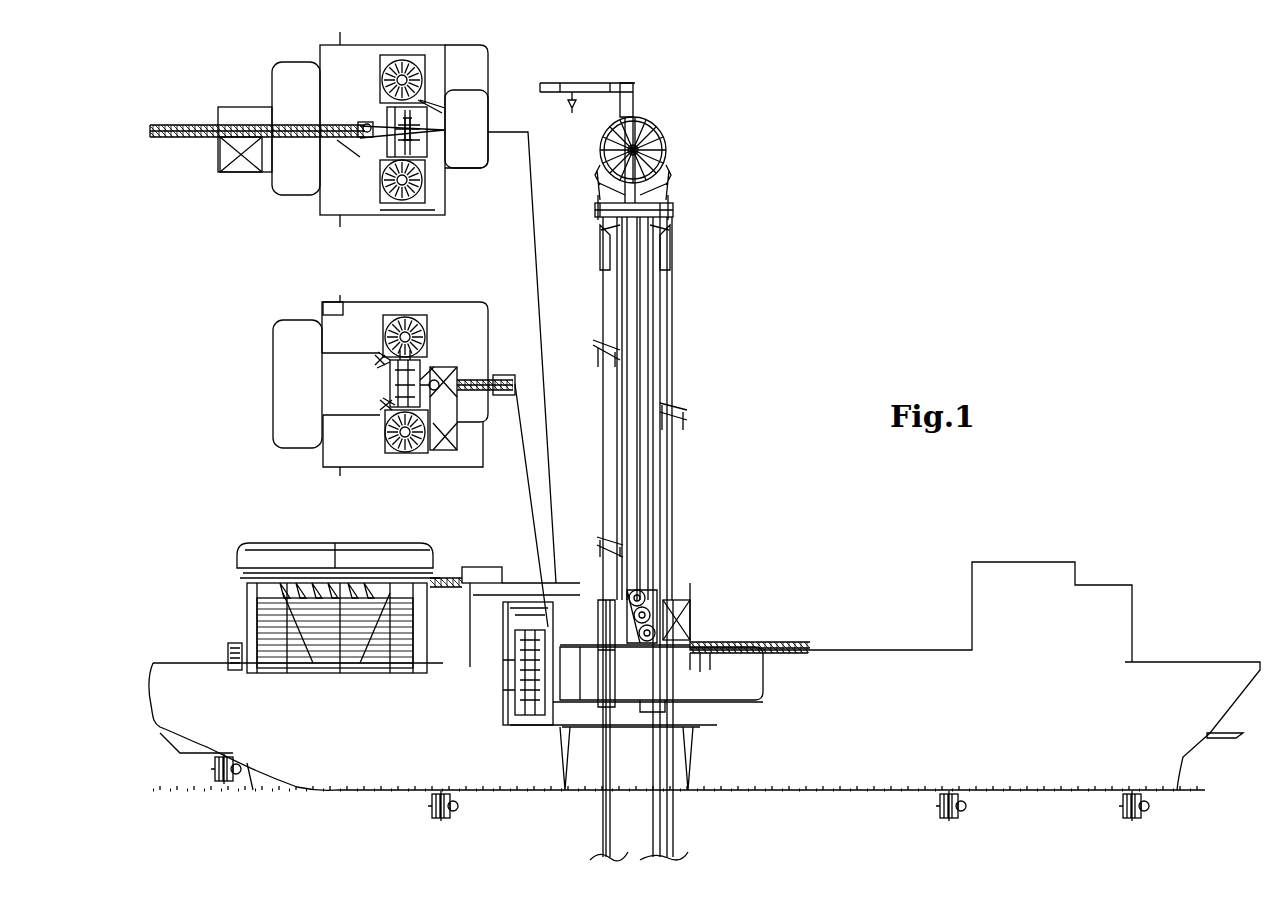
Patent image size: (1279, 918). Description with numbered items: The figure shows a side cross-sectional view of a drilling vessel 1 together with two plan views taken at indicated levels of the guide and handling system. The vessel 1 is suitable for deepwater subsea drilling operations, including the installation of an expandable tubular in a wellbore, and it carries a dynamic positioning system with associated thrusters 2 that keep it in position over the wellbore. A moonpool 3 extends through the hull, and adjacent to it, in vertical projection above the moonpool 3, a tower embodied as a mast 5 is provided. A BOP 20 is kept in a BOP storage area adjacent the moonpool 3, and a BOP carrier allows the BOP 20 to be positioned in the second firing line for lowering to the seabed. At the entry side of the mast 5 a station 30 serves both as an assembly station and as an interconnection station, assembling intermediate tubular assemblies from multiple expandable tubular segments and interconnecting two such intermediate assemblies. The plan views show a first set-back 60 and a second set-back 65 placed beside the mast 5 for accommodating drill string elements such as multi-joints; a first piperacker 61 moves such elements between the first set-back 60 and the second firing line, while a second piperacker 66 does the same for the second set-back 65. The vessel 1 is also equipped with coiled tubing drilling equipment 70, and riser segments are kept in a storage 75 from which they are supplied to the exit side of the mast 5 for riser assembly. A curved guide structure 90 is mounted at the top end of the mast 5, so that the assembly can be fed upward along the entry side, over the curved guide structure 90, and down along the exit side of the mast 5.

The vessel 1 is at (1090, 528).
The thrusters 2 is at (427, 807).
The moonpool 3 is at (645, 773).
The mast 5 is at (638, 273).
The BOP 20 is at (527, 623).
The station 30 is at (726, 630).
The first set-back 60 is at (413, 63).
The first piperacker 61 is at (380, 360).
The second set-back 65 is at (402, 193).
The second piperacker 66 is at (387, 403).
The coiled tubing drilling equipment 70 is at (483, 553).
The storage 75 is at (313, 628).
The curved guide structure 90 is at (667, 132).